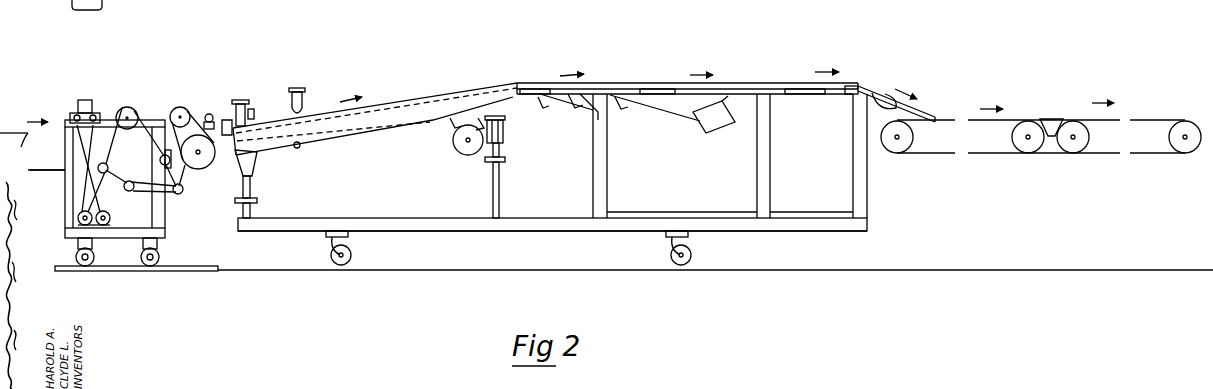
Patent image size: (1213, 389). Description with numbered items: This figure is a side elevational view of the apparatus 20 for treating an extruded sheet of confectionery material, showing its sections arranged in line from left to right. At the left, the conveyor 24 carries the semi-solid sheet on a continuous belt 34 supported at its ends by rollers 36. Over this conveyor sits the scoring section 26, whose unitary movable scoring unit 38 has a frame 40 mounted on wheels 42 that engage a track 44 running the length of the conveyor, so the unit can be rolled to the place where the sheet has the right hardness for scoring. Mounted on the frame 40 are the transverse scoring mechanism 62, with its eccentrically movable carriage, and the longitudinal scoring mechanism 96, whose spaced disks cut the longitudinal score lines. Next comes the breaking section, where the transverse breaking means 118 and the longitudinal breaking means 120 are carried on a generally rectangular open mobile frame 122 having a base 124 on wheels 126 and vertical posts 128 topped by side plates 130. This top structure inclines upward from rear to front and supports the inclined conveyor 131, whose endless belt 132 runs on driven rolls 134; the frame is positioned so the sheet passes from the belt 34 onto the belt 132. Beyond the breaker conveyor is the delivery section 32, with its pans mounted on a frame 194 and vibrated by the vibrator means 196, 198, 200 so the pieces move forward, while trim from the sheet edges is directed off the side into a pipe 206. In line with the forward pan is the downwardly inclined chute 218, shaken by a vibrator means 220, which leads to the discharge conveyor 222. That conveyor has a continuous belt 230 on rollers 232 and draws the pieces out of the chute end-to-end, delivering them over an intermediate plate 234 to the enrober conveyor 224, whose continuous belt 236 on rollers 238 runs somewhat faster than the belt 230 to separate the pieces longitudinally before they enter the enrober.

The apparatus 20 is at (687, 45).
The conveyor 24 is at (12, 128).
The scoring section 26 is at (116, 68).
The delivery section 32 is at (719, 77).
The continuous belt 34 is at (36, 162).
The rollers 36 is at (203, 170).
The scoring unit 38 is at (157, 108).
The frame 40 is at (158, 208).
The wheels 42 is at (95, 256).
The track 44 is at (195, 267).
The transverse scoring mechanism 62 is at (85, 98).
The longitudinal scoring mechanism 96 is at (126, 106).
The transverse breaking means 118 is at (240, 96).
The longitudinal breaking means 120 is at (298, 86).
The mobile frame 122 is at (425, 233).
The base 124 is at (400, 200).
The wheels 126 is at (351, 254).
The vertical posts 128 is at (252, 208).
The side plates 130 is at (270, 150).
The inclined conveyor 131 is at (396, 97).
The endless belt 132 is at (399, 128).
The rolls 134 is at (462, 155).
The frame 194 is at (701, 213).
The vibrator means 196 is at (536, 112).
The vibrator means 198 is at (620, 110).
The vibrator means 200 is at (700, 128).
The pipe 206 is at (608, 182).
The chute 218 is at (871, 87).
The vibrator means 220 is at (862, 113).
The discharge conveyor 222 is at (963, 107).
The enrober conveyor 224 is at (1131, 105).
The continuous belt 230 is at (944, 158).
The rollers 232 is at (897, 155).
The intermediate plate 234 is at (1053, 120).
The continuous belt 236 is at (1140, 155).
The rollers 238 is at (1075, 154).